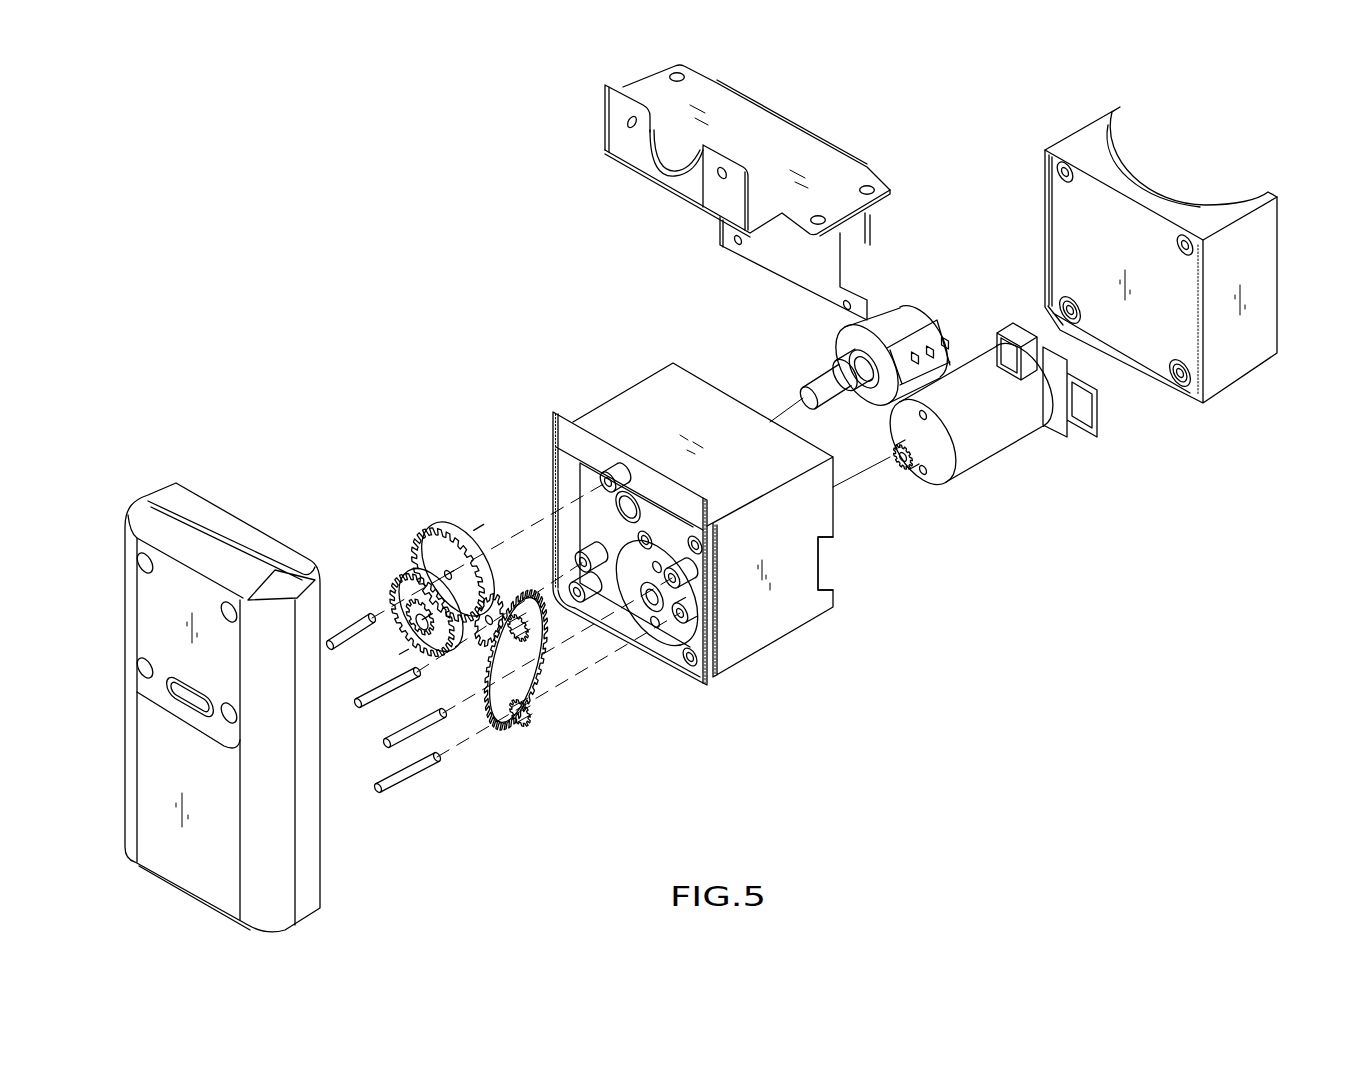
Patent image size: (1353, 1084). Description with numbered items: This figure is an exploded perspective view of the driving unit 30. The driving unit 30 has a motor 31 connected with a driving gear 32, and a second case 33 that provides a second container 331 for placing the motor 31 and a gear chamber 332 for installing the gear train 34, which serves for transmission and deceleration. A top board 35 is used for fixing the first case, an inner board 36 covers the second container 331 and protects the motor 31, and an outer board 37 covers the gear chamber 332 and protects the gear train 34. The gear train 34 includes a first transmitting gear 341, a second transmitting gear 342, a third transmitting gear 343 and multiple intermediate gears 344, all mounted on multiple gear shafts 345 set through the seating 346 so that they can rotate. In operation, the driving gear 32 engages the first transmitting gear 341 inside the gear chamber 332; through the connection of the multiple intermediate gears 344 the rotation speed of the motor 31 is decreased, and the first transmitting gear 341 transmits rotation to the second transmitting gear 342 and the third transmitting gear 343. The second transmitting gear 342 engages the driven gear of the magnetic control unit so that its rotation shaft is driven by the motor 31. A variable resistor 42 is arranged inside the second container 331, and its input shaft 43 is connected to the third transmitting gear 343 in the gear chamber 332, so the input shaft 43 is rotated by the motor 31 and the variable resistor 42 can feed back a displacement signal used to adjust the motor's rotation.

The driving unit 30 is at (266, 190).
The motor 31 is at (993, 430).
The driving gear 32 is at (917, 473).
The second case 33 is at (696, 546).
The second container 331 is at (820, 560).
The gear chamber 332 is at (590, 510).
The gear train 34 is at (503, 668).
The first transmitting gear 341 is at (537, 717).
The second transmitting gear 342 is at (433, 547).
The third transmitting gear 343 is at (410, 607).
The intermediate gear 344 is at (468, 714).
The gear shaft 345 is at (387, 790).
The seating 346 is at (682, 577).
The top board 35 is at (792, 148).
The inner board 36 is at (1152, 355).
The outer board 37 is at (282, 890).
The variable resistor 42 is at (905, 302).
The input shaft 43 is at (823, 385).